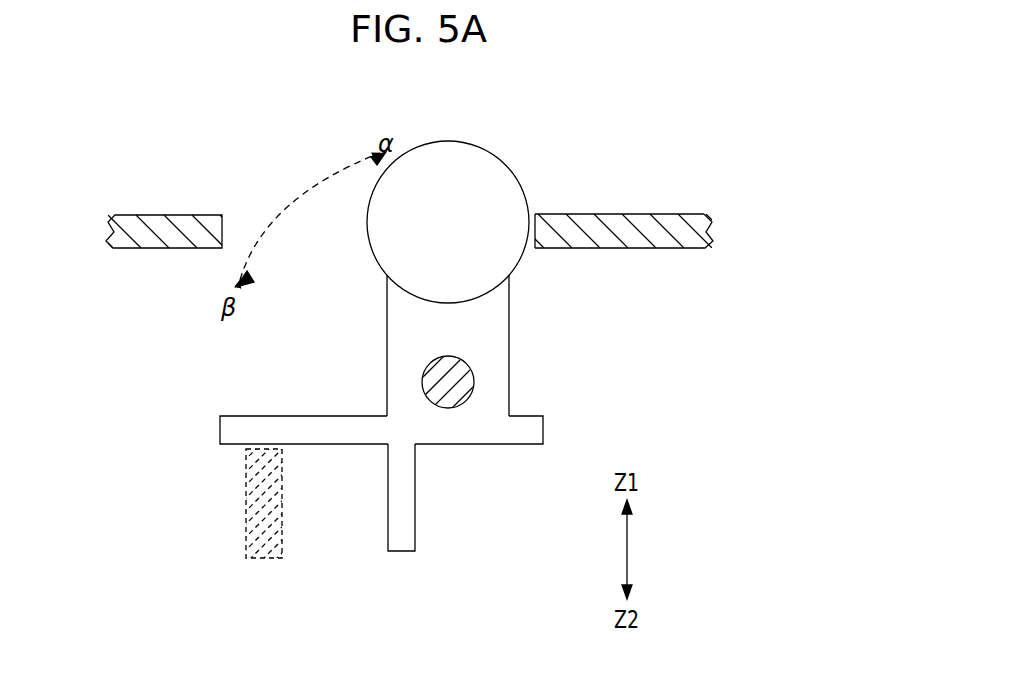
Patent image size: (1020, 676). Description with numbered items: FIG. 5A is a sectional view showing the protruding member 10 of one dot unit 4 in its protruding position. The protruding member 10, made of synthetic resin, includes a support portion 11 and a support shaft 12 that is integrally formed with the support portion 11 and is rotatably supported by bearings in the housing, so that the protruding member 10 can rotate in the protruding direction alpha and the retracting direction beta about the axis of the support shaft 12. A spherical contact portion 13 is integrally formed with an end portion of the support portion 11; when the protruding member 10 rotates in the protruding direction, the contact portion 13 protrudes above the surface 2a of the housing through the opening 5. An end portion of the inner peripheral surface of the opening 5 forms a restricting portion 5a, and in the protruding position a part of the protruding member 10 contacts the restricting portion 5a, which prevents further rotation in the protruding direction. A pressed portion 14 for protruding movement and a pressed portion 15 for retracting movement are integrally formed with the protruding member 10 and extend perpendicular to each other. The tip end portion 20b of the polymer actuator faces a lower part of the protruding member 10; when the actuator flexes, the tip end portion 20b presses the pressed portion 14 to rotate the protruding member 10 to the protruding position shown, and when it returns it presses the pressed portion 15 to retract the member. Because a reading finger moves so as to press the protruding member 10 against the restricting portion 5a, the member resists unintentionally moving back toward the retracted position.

The dot unit 4 is at (323, 99).
The opening 5 is at (195, 228).
The restricting portion 5a is at (534, 222).
The surface of the housing 2a is at (617, 214).
The protruding member 10 is at (525, 339).
The support portion 11 is at (407, 328).
The support shaft 12 is at (444, 400).
The contact portion 13 is at (453, 155).
The pressed portion for protruding movement 14 is at (232, 432).
The pressed portion for retracting movement 15 is at (402, 541).
The tip end portion 20b is at (258, 525).